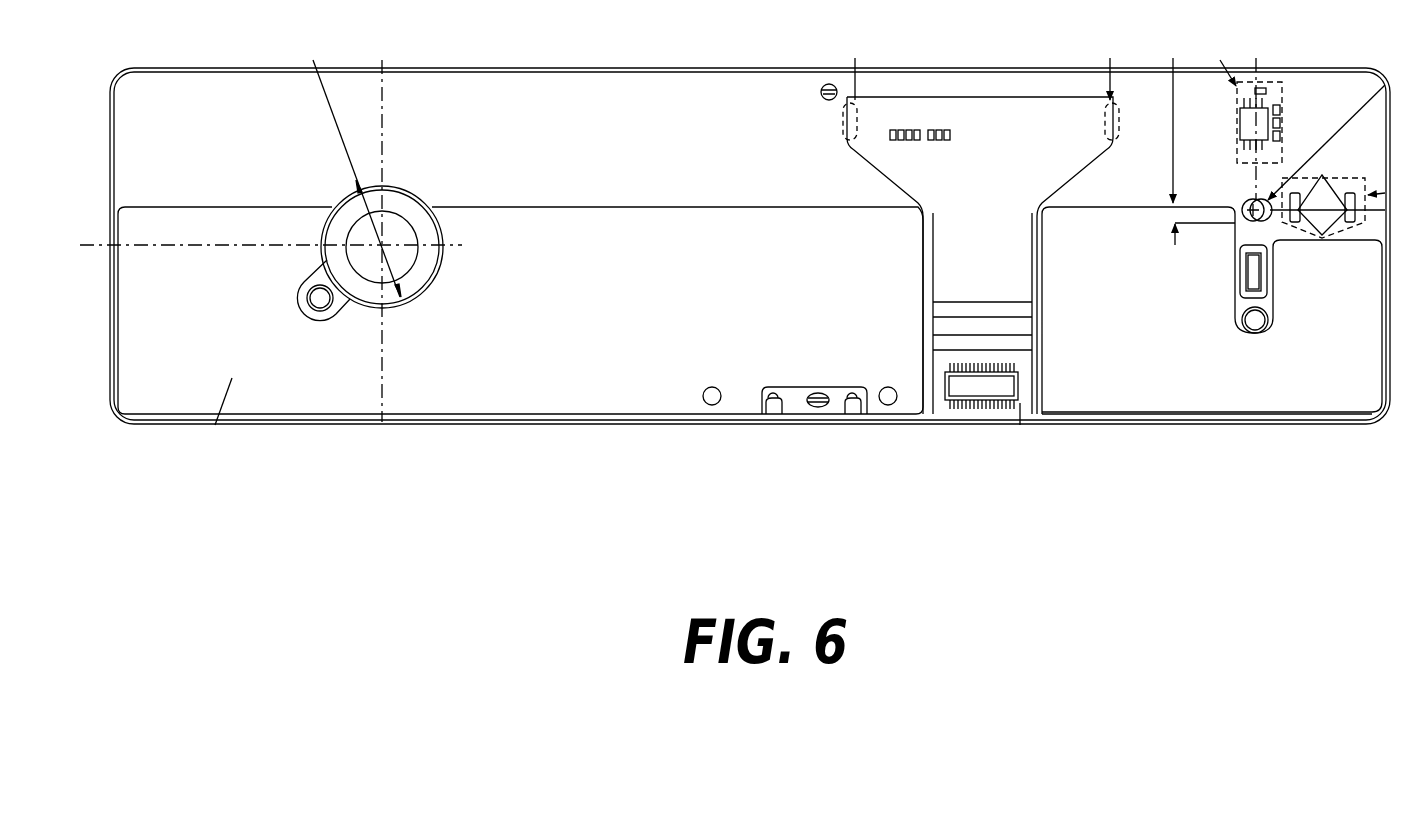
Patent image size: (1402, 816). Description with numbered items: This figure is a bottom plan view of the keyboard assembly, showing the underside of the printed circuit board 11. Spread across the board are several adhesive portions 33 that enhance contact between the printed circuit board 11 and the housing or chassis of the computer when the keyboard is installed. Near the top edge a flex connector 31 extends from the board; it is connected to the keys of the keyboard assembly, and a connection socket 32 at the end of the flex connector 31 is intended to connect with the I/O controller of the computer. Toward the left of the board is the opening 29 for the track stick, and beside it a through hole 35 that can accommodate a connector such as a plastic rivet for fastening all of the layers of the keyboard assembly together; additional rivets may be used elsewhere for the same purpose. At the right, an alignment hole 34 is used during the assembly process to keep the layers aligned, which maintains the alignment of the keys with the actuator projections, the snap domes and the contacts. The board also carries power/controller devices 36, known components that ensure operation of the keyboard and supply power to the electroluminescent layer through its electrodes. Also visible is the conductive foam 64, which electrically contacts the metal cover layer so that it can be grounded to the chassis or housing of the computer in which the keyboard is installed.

The printed circuit board 11 is at (618, 132).
The opening 29 is at (395, 232).
The flex connector 31 is at (1008, 125).
The connection socket 32 is at (997, 383).
The adhesive portions 33 is at (196, 373).
The alignment hole 34 is at (1250, 200).
The through hole 35 is at (306, 297).
The power/controller devices 36 is at (1322, 200).
The conductive foam 64 is at (1252, 278).